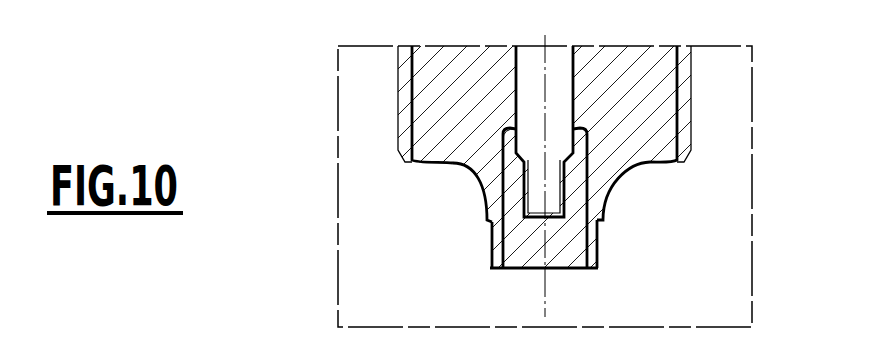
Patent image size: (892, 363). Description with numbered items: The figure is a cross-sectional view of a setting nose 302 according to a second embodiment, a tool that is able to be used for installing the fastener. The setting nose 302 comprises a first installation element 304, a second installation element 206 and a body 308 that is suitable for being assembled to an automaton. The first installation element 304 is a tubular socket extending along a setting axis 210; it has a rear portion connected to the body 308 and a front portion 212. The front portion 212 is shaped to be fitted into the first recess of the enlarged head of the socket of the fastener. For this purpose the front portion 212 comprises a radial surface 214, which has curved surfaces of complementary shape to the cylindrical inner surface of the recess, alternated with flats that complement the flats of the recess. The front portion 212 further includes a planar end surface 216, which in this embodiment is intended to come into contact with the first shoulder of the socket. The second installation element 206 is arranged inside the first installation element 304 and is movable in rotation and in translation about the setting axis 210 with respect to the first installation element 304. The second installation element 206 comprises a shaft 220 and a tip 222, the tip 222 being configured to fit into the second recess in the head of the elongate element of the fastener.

The second installation element 206 is at (576, 127).
The setting axis 210 is at (547, 312).
The front portion 212 is at (452, 259).
The radial surface 214 is at (598, 257).
The end surface 216 is at (500, 272).
The shaft 220 is at (514, 132).
The tip 222 is at (565, 200).
The setting nose 302 is at (545, 186).
The first installation element 304 is at (452, 216).
The body 308 is at (385, 123).